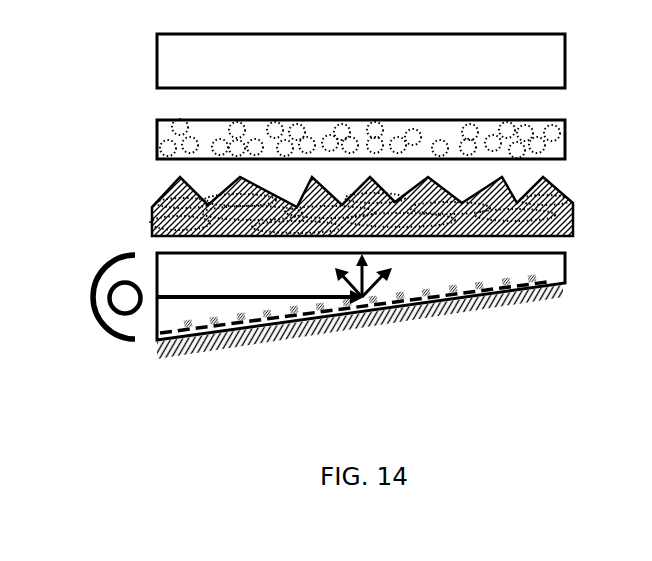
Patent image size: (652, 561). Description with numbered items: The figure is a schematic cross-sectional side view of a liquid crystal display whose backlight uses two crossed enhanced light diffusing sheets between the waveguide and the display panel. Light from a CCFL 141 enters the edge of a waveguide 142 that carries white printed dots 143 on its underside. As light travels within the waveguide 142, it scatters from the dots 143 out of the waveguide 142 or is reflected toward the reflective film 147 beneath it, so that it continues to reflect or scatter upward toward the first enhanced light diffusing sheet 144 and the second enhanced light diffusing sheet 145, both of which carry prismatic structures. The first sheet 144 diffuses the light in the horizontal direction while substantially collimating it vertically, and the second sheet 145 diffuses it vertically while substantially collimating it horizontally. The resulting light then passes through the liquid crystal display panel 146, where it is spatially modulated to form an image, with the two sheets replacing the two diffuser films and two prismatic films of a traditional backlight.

The CCFL 141 is at (128, 305).
The waveguide 142 is at (552, 273).
The white printed dots 143 is at (528, 280).
The first enhanced light diffusing sheet 144 is at (573, 212).
The second enhanced light diffusing sheet 145 is at (555, 148).
The liquid crystal display panel 146 is at (560, 55).
The reflective film 147 is at (522, 300).